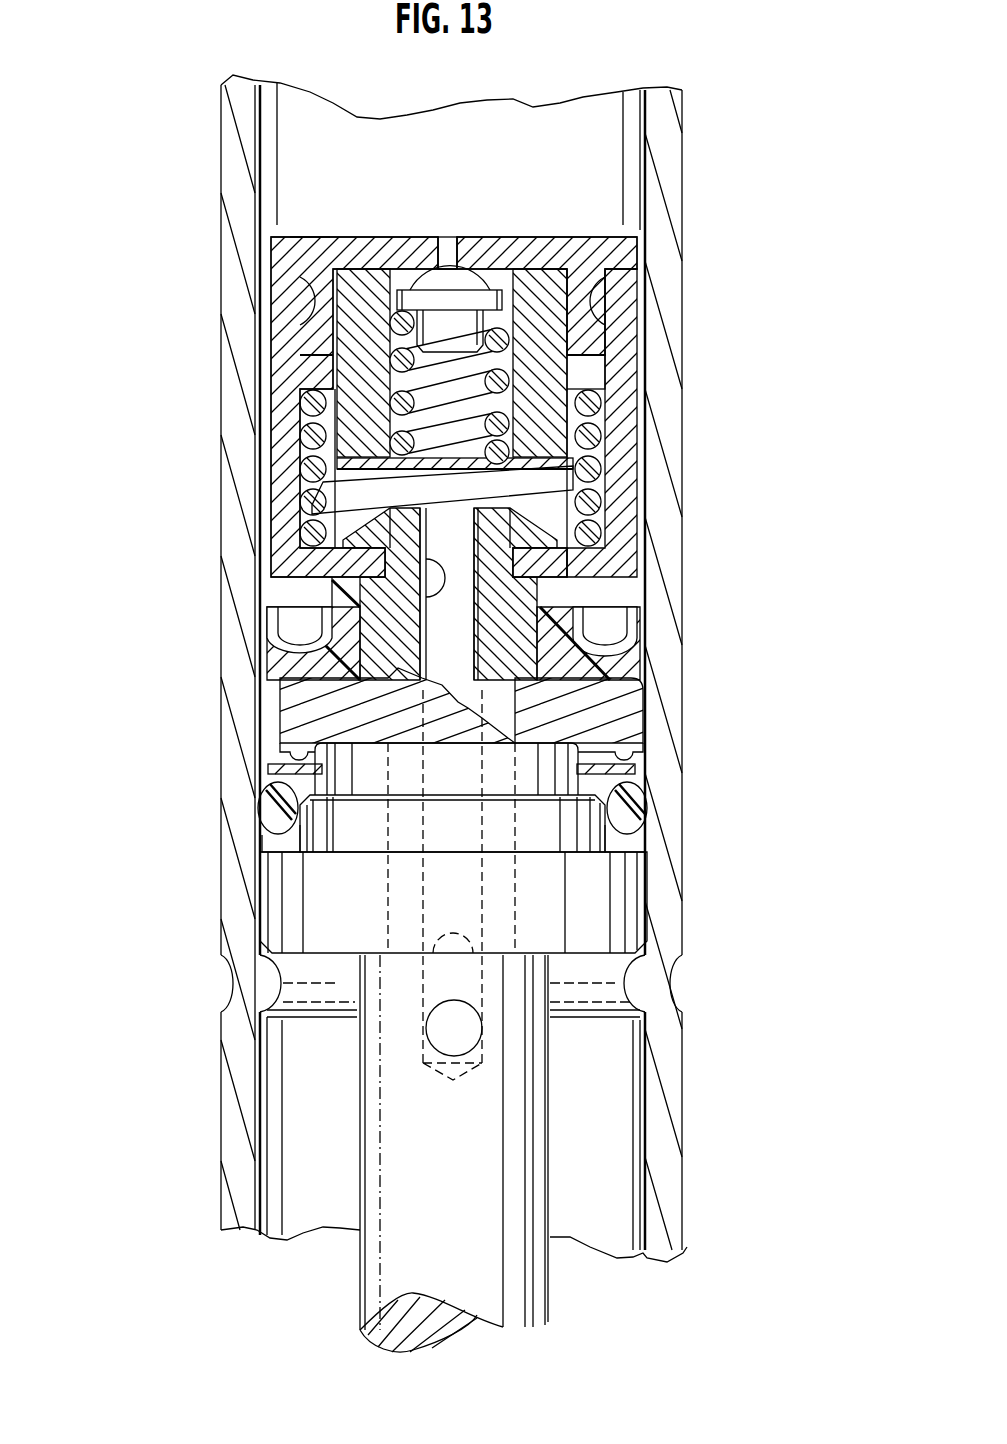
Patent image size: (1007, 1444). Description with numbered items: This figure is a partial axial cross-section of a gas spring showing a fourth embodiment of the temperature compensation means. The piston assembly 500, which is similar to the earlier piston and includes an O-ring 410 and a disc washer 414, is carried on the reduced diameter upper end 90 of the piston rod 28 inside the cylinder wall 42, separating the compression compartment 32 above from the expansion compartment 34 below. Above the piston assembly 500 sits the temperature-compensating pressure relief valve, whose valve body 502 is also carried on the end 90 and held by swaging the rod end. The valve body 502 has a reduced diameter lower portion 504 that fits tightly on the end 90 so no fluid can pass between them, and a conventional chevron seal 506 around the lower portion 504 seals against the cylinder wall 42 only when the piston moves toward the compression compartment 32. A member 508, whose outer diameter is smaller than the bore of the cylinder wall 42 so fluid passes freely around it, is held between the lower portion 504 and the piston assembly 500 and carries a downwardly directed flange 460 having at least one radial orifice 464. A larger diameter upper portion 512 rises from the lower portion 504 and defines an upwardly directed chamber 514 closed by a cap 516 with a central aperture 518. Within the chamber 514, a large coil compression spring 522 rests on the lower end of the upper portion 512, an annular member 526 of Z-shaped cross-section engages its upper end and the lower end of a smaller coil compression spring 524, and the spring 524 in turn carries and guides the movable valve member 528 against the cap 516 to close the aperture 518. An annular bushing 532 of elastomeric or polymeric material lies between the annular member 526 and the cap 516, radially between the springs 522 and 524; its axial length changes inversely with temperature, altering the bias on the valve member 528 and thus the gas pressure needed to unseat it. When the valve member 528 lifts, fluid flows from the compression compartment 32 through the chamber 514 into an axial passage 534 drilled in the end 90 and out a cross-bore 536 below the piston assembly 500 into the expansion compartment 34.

The piston rod 28 is at (535, 1285).
The compression compartment 32 is at (576, 146).
The expansion compartment 34 is at (620, 1158).
The cylinder wall 42 is at (682, 1110).
The reduced diameter portion of the piston rod 90 is at (517, 703).
The O-ring 410 is at (268, 815).
The disc washer 414 is at (270, 803).
The downwardly directed flange 460 is at (625, 748).
The radial orifice 464 is at (268, 770).
The piston assembly 500 is at (282, 907).
The valve body 502 is at (250, 433).
The lower portion of the valve body 504 is at (528, 588).
The chevron seal 506 is at (590, 622).
The member 508 is at (305, 712).
The upper portion of the valve body 512 is at (623, 442).
The chamber 514 is at (592, 377).
The cap 516 is at (300, 226).
The central aperture 518 is at (445, 235).
The coil compression spring 522 is at (595, 470).
The coil compression spring 524 is at (392, 365).
The annular member 526 is at (360, 478).
The movable valve member 528 is at (462, 292).
The annular bushing 532 is at (357, 320).
The axial passage 534 is at (383, 563).
The cross-bore 536 is at (430, 1048).